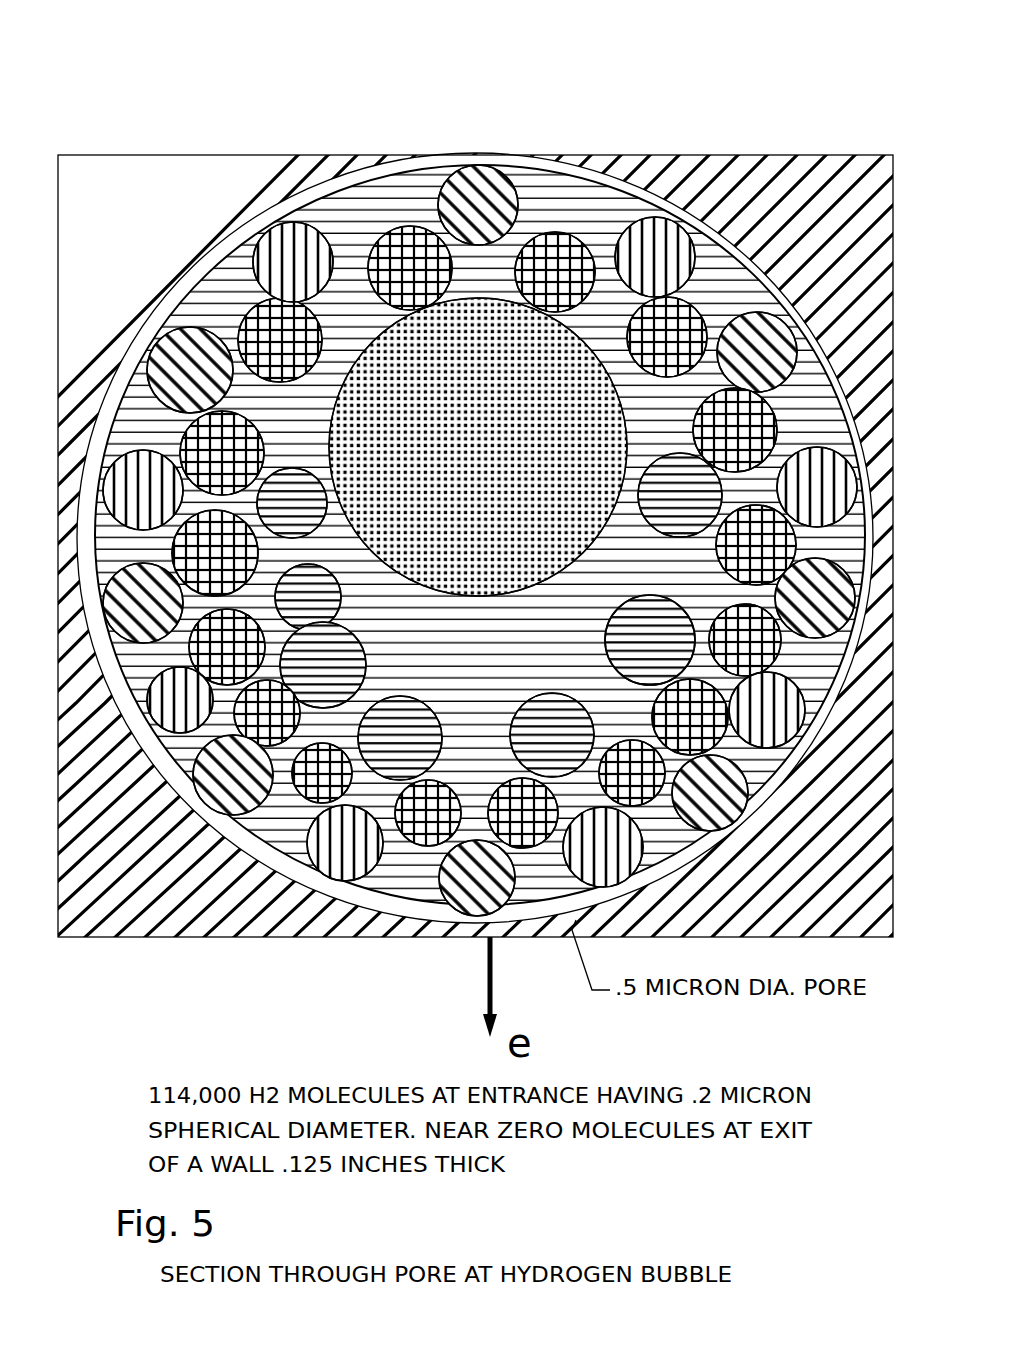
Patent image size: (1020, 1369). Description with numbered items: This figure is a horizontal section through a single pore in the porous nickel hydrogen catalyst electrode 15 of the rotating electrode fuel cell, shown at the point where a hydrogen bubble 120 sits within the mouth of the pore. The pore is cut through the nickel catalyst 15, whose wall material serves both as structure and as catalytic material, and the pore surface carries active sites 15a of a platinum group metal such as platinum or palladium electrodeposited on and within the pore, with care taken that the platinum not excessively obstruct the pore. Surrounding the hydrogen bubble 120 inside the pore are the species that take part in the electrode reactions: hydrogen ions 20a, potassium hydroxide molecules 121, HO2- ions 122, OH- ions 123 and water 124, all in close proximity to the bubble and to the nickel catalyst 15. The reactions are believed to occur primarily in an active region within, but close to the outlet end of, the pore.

The porous nickel hydrogen catalyst electrode 15 is at (265, 896).
The active sites 15a is at (762, 793).
The hydrogen ions 20a is at (293, 262).
The hydrogen bubble 120 is at (490, 440).
The potassium hydroxide molecules 121 is at (478, 205).
The HO2- ions 122 is at (550, 740).
The OH- ions 123 is at (570, 250).
The water 124 is at (600, 232).